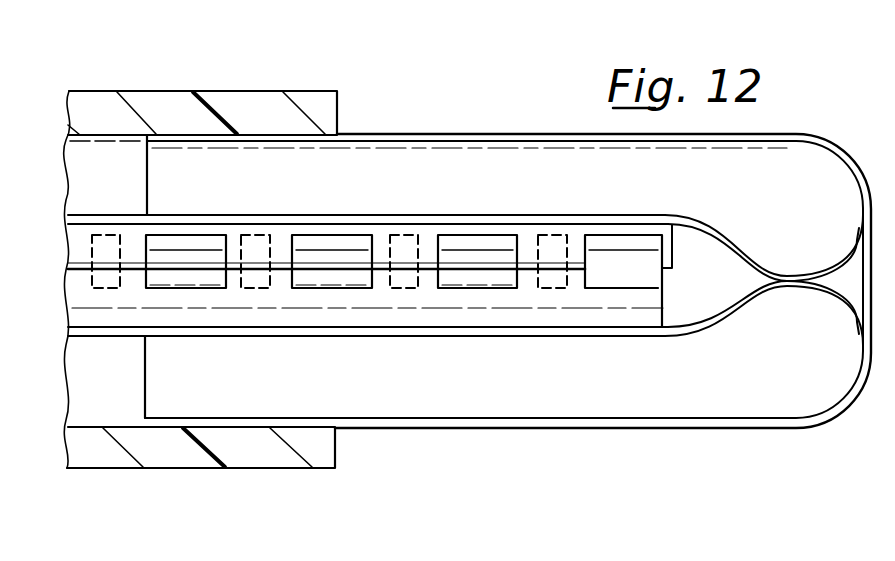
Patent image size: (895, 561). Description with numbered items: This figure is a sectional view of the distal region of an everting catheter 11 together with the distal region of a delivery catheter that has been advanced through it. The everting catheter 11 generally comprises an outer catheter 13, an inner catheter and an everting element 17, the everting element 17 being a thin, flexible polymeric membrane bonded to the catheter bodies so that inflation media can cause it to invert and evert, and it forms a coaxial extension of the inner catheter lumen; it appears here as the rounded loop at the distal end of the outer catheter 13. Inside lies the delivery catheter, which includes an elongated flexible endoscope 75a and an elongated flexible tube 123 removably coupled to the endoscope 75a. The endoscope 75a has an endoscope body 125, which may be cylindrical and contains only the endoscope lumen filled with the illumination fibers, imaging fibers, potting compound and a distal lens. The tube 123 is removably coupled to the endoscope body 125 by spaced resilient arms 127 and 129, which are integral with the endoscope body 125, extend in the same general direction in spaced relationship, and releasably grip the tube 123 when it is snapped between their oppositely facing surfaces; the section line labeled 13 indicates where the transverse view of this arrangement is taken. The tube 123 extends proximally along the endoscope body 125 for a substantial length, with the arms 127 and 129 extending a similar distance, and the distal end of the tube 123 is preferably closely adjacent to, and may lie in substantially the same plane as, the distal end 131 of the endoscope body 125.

The everting catheter 11 is at (278, 84).
The everting element 17 is at (557, 133).
The elongated flexible tube 123 is at (202, 217).
The endoscope body 125 is at (445, 310).
The resilient arm 127 is at (455, 237).
The resilient arm 129 is at (390, 253).
The distal end of the endoscope body 131 is at (670, 307).
The elongated flexible endoscope 75a is at (300, 297).
The outer catheter 13 is at (620, 248).